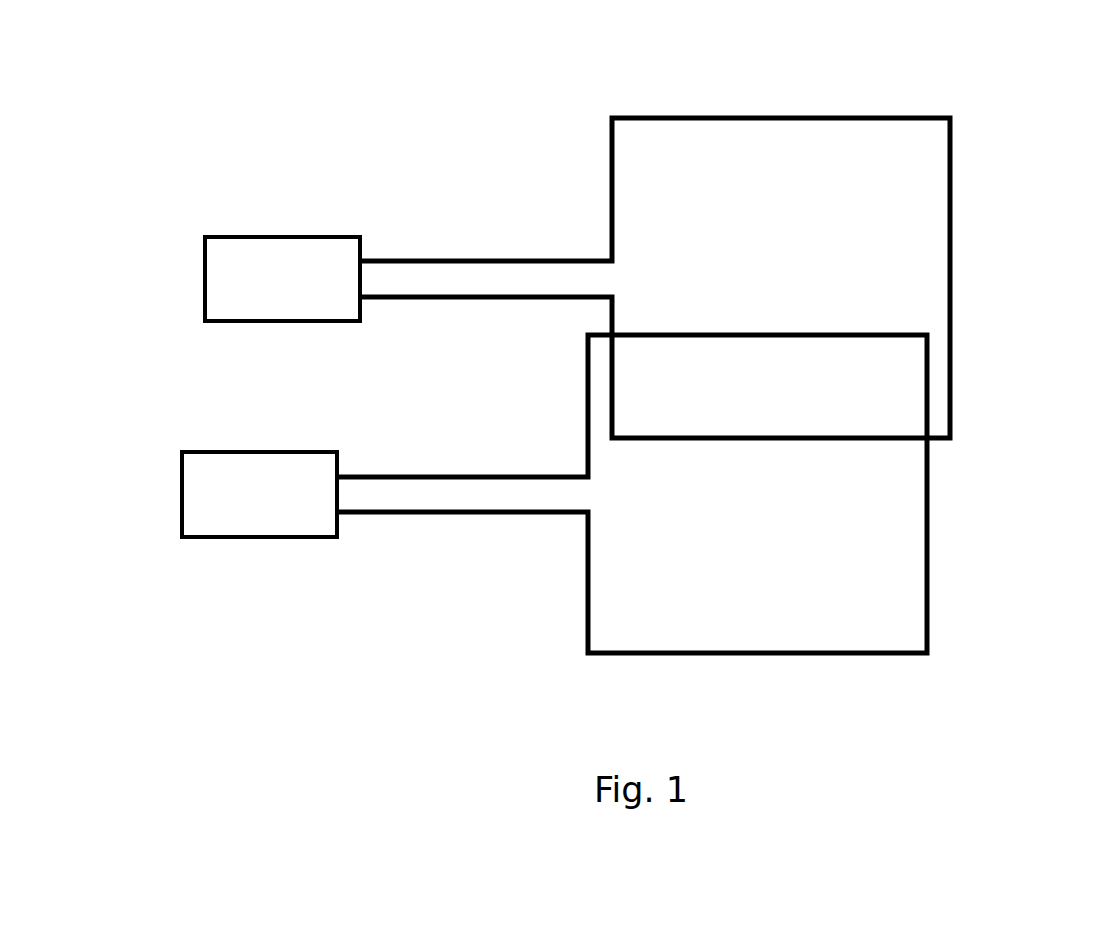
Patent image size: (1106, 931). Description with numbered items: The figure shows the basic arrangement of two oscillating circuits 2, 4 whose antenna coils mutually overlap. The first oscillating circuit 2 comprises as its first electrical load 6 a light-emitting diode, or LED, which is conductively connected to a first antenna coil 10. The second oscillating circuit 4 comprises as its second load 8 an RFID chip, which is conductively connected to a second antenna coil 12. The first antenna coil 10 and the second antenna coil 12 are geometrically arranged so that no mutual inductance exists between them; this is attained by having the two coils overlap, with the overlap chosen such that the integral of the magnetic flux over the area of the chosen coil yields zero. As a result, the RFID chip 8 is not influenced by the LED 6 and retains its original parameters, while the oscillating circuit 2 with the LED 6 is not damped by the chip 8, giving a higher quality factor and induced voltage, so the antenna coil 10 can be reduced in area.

The first oscillating circuit 2 is at (181, 142).
The second oscillating circuit 4 is at (180, 665).
The first electrical load 6 is at (205, 280).
The second load 8 is at (182, 493).
The first antenna coil 10 is at (950, 142).
The second antenna coil 12 is at (927, 632).